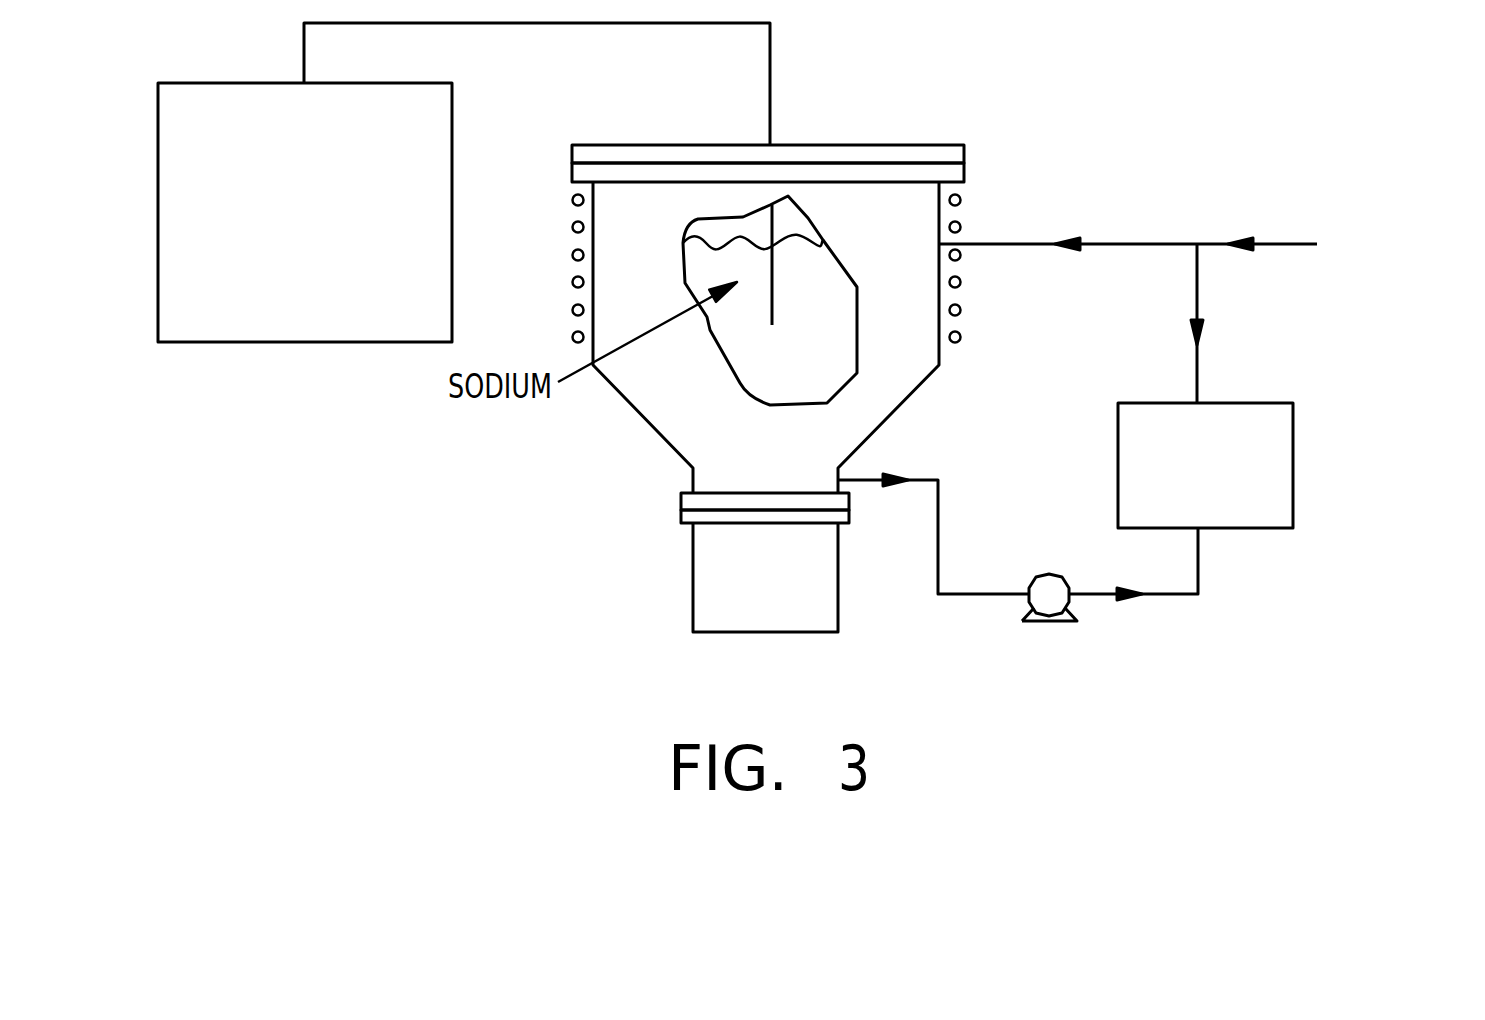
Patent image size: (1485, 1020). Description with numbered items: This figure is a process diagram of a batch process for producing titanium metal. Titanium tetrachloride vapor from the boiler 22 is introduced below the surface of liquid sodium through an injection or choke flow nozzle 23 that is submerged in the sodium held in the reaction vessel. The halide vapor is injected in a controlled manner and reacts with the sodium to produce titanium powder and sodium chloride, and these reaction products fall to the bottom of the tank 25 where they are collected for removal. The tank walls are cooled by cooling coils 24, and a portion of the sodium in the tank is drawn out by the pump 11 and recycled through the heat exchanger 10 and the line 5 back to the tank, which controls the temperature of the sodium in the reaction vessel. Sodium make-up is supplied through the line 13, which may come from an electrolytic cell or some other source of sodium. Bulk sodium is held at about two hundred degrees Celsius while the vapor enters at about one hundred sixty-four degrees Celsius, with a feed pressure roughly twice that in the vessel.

The line 5 is at (983, 307).
The heat exchanger 10 is at (1293, 418).
The pump 11 is at (1027, 622).
The sodium make-up line 13 is at (1273, 244).
The boiler 22 is at (452, 155).
The injection or choke flow nozzle 23 is at (746, 347).
The cooling coils 24 is at (960, 197).
The tank 25 is at (693, 593).